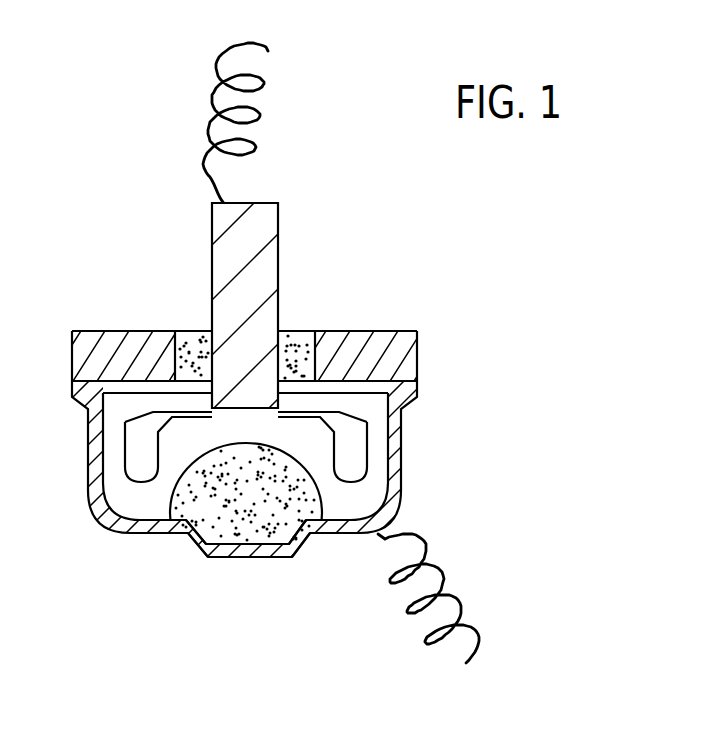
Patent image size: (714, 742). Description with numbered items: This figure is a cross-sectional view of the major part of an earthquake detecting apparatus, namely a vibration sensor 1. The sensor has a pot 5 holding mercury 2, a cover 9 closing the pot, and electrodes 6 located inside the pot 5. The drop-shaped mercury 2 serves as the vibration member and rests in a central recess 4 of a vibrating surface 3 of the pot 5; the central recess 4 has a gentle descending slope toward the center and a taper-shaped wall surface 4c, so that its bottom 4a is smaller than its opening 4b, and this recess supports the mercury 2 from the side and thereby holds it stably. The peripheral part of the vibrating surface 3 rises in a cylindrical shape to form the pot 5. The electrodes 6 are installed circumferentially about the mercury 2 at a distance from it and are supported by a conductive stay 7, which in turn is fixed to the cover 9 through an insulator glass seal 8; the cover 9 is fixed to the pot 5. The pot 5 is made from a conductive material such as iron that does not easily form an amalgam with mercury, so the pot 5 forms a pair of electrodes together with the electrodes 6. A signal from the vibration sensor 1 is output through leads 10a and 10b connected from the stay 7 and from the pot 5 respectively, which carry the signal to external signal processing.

The vibration sensor 1 is at (257, 697).
The mercury 2 is at (198, 497).
The vibrating surface 3 is at (150, 538).
The central recess 4 is at (232, 547).
The bottom 4a is at (285, 550).
The opening 4b is at (308, 543).
The taper-shaped wall surface 4c is at (198, 553).
The pot 5 is at (403, 473).
The electrodes 6 is at (133, 450).
The conductive stay 7 is at (265, 282).
The insulator glass seal 8 is at (303, 340).
The cover 9 is at (405, 337).
The lead 10a is at (228, 69).
The lead 10b is at (480, 642).